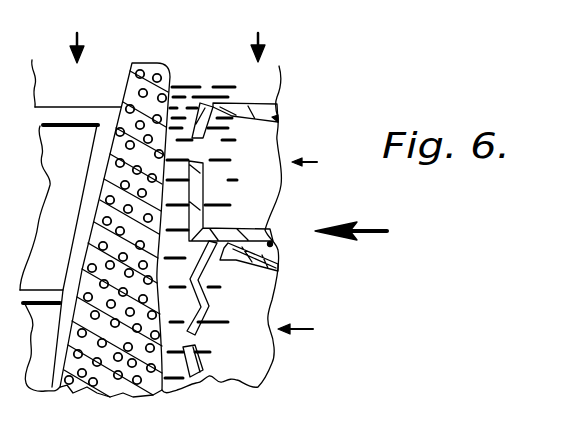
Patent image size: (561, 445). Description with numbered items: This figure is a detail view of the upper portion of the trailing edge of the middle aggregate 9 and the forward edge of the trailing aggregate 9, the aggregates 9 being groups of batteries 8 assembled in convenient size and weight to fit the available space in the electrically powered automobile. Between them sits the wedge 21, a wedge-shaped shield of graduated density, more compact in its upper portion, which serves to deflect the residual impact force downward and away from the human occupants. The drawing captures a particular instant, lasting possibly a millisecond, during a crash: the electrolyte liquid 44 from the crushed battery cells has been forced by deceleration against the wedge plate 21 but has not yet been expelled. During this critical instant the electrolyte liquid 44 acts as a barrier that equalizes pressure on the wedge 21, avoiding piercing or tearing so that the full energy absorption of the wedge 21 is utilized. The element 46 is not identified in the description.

The wedge 21 is at (132, 66).
The electrolyte liquid 44 is at (191, 78).
The anchor strip 46 is at (253, 104).
The batteries 8 is at (303, 246).
The aggregates 9 is at (171, 33).